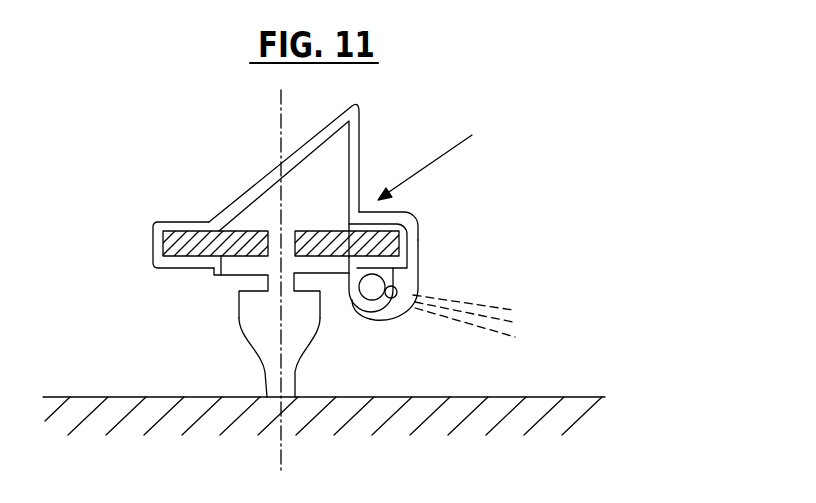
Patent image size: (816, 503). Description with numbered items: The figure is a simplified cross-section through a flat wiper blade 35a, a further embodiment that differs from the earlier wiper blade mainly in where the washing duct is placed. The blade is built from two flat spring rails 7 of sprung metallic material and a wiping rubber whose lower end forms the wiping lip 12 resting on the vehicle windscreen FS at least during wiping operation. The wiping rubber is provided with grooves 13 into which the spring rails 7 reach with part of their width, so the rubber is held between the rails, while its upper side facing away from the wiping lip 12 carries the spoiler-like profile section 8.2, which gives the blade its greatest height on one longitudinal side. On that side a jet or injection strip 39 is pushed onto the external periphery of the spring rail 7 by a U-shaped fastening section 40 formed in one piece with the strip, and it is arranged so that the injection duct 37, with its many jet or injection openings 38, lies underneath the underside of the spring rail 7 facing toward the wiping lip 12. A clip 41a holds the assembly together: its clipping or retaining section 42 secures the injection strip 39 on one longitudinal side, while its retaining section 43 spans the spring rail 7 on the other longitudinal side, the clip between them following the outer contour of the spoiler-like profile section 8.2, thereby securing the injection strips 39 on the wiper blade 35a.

The spring rails 7 is at (203, 240).
The spoiler-like profile section 8.2 is at (291, 202).
The wiping lip 12 is at (283, 377).
The grooves 13 is at (225, 258).
The wiper blade 35a is at (451, 150).
The injection duct 37 is at (372, 290).
The injection openings 38 is at (396, 300).
The injection strips 39 is at (350, 295).
The fastening section 40 is at (402, 217).
The clips 41a is at (293, 152).
The retaining section 42 is at (421, 240).
The retaining section 43 is at (155, 268).
The vehicle windscreen FS is at (542, 396).